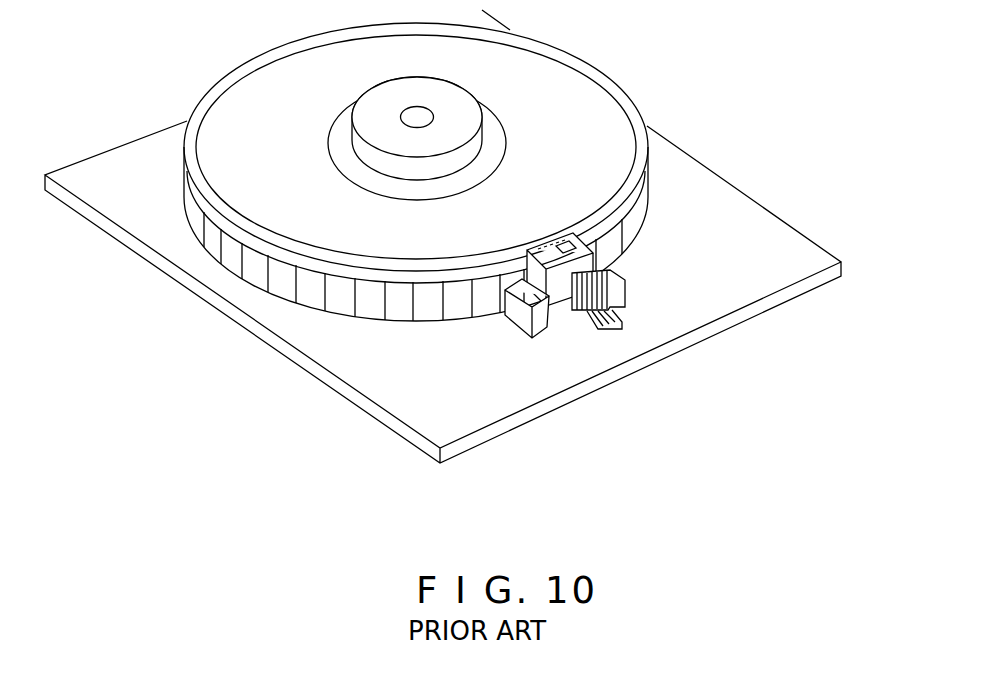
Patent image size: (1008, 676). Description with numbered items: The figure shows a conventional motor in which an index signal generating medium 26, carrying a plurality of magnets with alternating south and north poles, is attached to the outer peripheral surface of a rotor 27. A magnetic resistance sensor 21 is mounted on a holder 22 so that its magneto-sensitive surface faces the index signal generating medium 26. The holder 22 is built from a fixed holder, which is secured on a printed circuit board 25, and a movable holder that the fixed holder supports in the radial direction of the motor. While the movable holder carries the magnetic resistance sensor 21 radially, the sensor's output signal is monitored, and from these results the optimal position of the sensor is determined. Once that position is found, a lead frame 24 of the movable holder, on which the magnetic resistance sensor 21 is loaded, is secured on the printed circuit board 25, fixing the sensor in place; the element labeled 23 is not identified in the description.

The magnetic resistance sensor 21 is at (557, 243).
The holder 22 is at (520, 330).
The rotor rim 23 is at (647, 223).
The lead frame 24 is at (623, 322).
The printed circuit board 25 is at (757, 235).
The index signal generating medium 26 is at (362, 322).
The rotor 27 is at (593, 80).